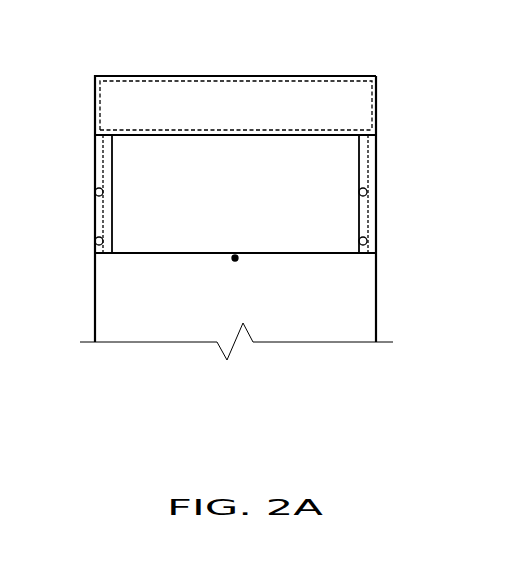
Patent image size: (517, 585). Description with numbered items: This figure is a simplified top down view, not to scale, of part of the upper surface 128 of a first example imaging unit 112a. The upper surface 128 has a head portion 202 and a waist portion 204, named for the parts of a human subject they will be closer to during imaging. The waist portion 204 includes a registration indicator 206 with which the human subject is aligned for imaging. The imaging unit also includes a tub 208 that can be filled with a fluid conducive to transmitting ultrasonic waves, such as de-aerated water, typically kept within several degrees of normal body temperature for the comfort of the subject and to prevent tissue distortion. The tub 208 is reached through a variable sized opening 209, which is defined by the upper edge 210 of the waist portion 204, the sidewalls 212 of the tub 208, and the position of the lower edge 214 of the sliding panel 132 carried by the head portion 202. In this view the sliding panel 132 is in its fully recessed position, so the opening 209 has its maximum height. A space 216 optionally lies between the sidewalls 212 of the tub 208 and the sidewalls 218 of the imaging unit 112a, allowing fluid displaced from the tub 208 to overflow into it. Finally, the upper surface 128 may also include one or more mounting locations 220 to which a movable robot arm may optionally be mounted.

The upper surface 128 is at (133, 75).
The head portion 202 is at (182, 93).
The sliding panel 132 is at (293, 97).
The imaging unit 112a is at (393, 148).
The space 216 is at (365, 170).
The sidewalls of the imaging unit 218 is at (370, 180).
The mounting locations 220 is at (367, 193).
The sidewalls of the tub 212 is at (112, 170).
The lower edge of the sliding panel 214 is at (297, 131).
The upper edge of the waist portion 210 is at (160, 253).
The opening 209 is at (333, 195).
The tub 208 is at (293, 237).
The registration indicator 206 is at (233, 263).
The waist portion 204 is at (148, 313).